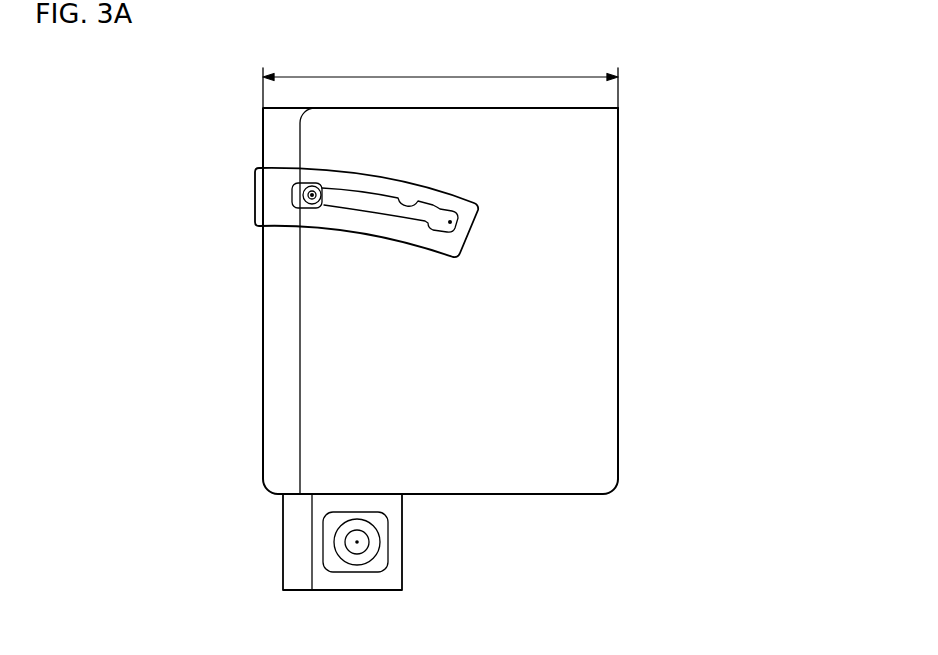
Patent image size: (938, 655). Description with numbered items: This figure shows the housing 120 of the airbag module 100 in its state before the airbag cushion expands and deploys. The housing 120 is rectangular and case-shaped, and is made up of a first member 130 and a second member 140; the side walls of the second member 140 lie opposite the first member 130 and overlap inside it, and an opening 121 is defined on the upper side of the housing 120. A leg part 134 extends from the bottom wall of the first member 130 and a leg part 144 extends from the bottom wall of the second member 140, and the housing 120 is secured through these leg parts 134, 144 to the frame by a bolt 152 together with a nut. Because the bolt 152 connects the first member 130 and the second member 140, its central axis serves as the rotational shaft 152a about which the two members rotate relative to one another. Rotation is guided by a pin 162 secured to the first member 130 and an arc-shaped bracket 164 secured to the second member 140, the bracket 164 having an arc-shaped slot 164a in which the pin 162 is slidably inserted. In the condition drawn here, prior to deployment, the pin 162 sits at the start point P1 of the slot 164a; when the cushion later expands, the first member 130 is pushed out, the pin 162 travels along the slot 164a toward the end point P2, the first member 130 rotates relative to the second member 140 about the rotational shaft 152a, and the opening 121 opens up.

The airbag module 100 is at (677, 103).
The opening 121 is at (440, 76).
The housing 120 is at (648, 463).
The first member 130 is at (600, 304).
The second member 140 is at (282, 330).
The leg part 144 is at (292, 543).
The leg part 134 is at (393, 573).
The bolt 152 is at (354, 549).
The rotational shaft 152a is at (359, 546).
The pin 162 is at (324, 190).
The bracket 164 is at (255, 202).
The slot 164a is at (413, 201).
The start point P1 is at (308, 186).
The end point P2 is at (458, 222).